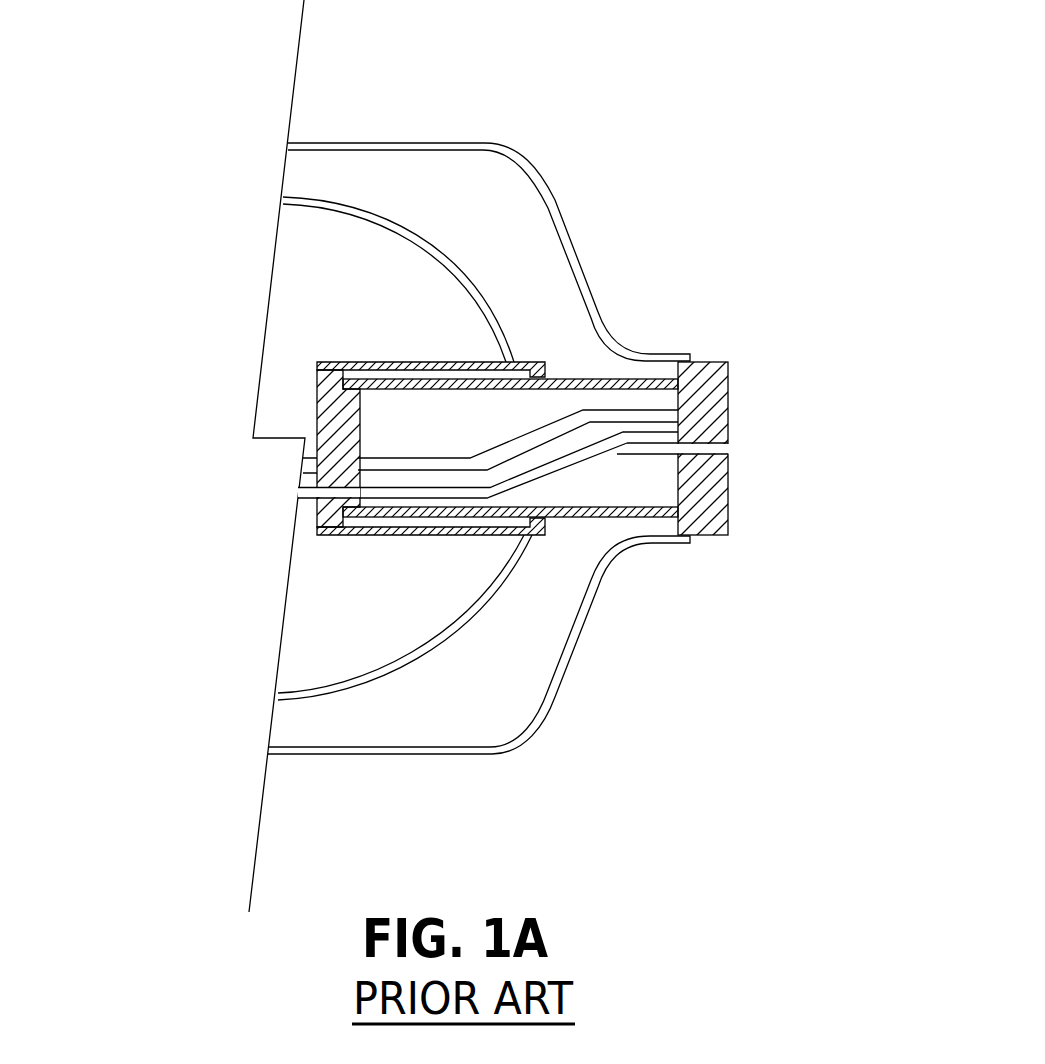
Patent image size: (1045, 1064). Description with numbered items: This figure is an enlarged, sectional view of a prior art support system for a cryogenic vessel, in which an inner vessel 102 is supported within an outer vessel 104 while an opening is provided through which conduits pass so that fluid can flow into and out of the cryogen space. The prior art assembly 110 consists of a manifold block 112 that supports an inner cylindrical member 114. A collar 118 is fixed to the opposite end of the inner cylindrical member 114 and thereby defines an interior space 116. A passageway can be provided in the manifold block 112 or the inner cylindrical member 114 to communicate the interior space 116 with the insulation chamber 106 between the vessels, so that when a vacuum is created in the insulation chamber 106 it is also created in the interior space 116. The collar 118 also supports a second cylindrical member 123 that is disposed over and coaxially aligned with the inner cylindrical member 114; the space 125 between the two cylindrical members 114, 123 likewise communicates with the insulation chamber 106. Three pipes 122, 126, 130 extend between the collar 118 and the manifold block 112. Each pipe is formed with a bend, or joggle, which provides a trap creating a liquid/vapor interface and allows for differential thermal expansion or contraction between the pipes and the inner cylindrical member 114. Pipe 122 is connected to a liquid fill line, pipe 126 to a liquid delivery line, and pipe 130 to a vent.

The inner vessel 102 is at (290, 195).
The outer vessel 104 is at (395, 142).
The insulation chamber 106 is at (470, 719).
The prior art assembly 110 is at (498, 383).
The manifold block 112 is at (708, 378).
The inner cylindrical member 114 is at (600, 380).
The interior space 116 is at (405, 433).
The collar 118 is at (327, 395).
The pipe 122 is at (613, 452).
The second cylindrical member 123 is at (462, 362).
The space between cylindrical members 125 is at (390, 523).
The pipe 126 is at (513, 472).
The pipe 130 is at (433, 462).